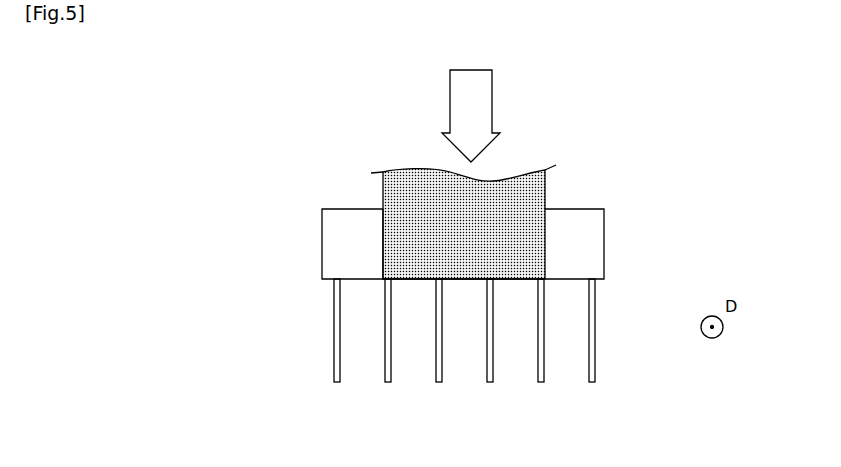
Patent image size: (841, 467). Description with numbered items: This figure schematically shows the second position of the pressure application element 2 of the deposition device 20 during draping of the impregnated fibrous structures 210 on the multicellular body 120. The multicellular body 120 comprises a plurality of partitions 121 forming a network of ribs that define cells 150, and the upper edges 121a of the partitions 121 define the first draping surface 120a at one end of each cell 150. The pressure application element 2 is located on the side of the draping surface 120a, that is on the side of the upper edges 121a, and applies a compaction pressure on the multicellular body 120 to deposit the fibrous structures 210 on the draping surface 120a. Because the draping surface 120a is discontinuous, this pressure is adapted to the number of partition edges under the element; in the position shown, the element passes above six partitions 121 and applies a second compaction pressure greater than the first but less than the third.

The deposition device 20 is at (469, 174).
The fibrous structures 210 is at (409, 197).
The pressure application element 2 is at (582, 218).
The multicellular body 120 is at (467, 296).
The first draping surface 120a is at (383, 279).
The partitions 121 is at (340, 363).
The upper edges 121a is at (590, 279).
The cells 150 is at (510, 332).